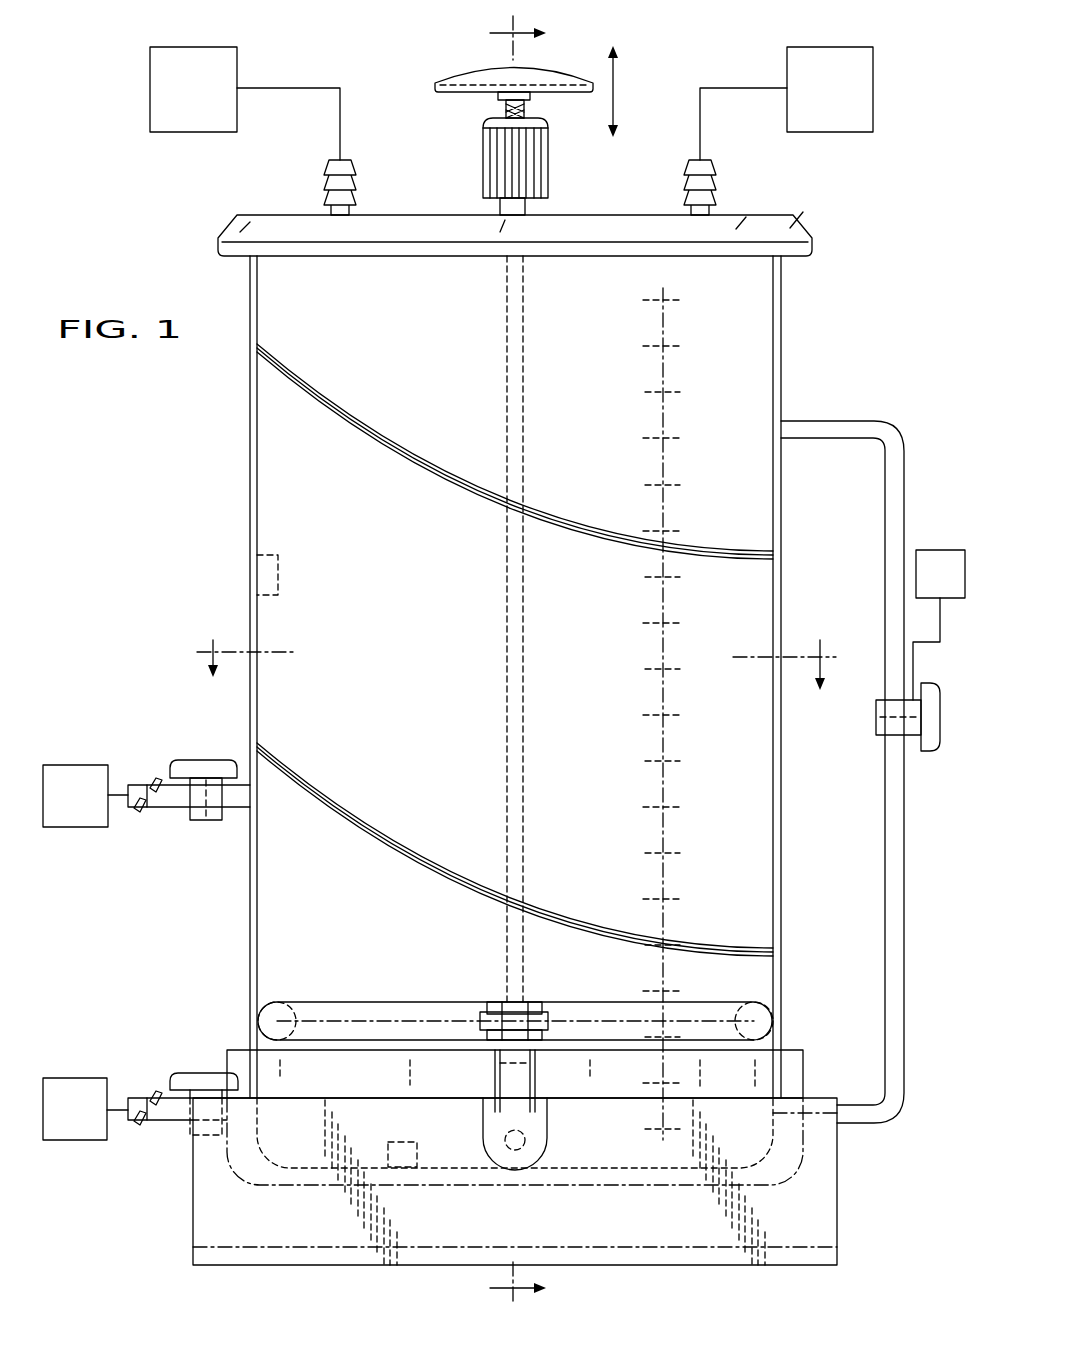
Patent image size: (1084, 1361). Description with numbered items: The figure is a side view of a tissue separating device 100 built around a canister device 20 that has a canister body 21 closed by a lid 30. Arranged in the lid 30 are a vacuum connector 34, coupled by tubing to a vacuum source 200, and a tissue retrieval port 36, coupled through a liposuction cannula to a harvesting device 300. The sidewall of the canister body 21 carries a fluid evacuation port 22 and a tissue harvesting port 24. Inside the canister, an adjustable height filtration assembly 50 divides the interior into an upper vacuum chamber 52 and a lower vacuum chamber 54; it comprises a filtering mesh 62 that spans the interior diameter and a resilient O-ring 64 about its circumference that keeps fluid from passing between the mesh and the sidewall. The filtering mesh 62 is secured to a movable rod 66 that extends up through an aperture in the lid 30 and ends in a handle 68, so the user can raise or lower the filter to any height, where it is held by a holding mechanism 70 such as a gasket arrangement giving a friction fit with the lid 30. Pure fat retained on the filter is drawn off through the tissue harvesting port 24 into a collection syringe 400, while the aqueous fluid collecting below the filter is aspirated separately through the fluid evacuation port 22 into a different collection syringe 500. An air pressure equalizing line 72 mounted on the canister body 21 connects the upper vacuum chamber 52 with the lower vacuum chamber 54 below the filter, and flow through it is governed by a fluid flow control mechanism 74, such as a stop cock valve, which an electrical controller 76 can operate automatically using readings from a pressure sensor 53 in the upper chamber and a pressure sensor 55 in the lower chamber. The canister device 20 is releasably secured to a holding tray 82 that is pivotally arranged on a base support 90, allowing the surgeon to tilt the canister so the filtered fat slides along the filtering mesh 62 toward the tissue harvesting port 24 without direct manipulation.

The tissue separating device 100 is at (205, 526).
The canister device 20 is at (792, 404).
The canister body 21 is at (782, 502).
The fluid evacuation port 22 is at (137, 1098).
The tissue harvesting port 24 is at (138, 785).
The lid 30 is at (765, 232).
The vacuum connector 34 is at (327, 170).
The tissue retrieval port 36 is at (715, 165).
The adjustable height filtration assembly 50 is at (530, 982).
The upper vacuum chamber 52 is at (735, 822).
The pressure sensor 53 is at (268, 574).
The lower vacuum chamber 54 is at (740, 1118).
The pressure sensor 55 is at (402, 1160).
The filtering mesh 62 is at (693, 1018).
The resilient O-ring 64 is at (760, 1013).
The movable rod 66 is at (507, 397).
The handle 68 is at (450, 78).
The holding mechanism 70 is at (483, 150).
The air pressure equalizing line 72 is at (897, 477).
The fluid flow control mechanism 74 is at (915, 745).
The electrical controller 76 is at (953, 587).
The holding tray 82 is at (237, 1062).
The base support 90 is at (228, 1218).
The vacuum source 200 is at (212, 101).
The harvesting device 300 is at (849, 101).
The collection syringe 400 is at (94, 808).
The collection syringe 500 is at (94, 1121).